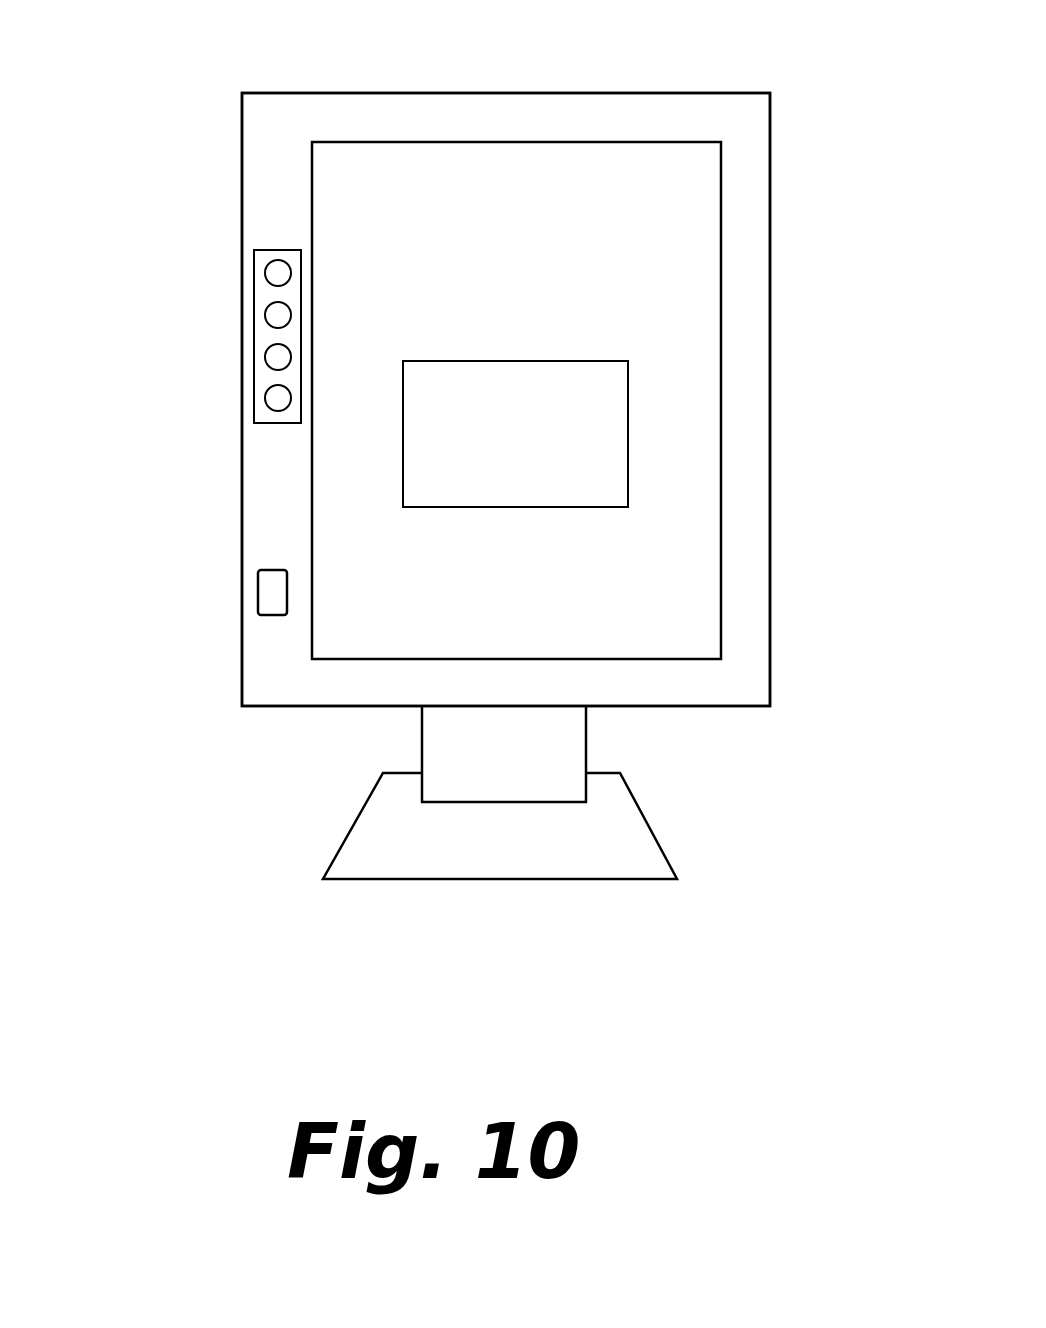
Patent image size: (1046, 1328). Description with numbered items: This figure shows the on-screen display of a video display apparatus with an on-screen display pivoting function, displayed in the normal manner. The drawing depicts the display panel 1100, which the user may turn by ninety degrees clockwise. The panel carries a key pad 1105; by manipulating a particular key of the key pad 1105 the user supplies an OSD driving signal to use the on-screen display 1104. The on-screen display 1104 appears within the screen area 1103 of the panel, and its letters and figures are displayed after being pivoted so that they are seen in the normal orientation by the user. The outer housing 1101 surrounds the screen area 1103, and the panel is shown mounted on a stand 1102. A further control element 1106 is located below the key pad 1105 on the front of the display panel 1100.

The display panel 1100 is at (134, 150).
The display housing 1101 is at (771, 370).
The stand 1102 is at (500, 879).
The screen 1103 is at (695, 590).
The on-screen display 1104 is at (403, 361).
The key pad 1105 is at (262, 341).
The power switch 1106 is at (258, 615).